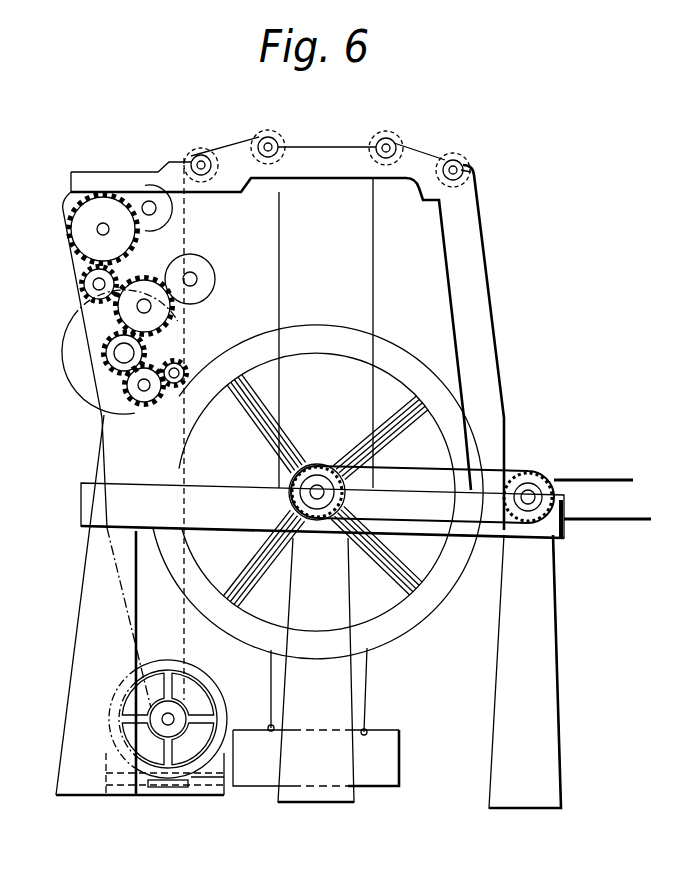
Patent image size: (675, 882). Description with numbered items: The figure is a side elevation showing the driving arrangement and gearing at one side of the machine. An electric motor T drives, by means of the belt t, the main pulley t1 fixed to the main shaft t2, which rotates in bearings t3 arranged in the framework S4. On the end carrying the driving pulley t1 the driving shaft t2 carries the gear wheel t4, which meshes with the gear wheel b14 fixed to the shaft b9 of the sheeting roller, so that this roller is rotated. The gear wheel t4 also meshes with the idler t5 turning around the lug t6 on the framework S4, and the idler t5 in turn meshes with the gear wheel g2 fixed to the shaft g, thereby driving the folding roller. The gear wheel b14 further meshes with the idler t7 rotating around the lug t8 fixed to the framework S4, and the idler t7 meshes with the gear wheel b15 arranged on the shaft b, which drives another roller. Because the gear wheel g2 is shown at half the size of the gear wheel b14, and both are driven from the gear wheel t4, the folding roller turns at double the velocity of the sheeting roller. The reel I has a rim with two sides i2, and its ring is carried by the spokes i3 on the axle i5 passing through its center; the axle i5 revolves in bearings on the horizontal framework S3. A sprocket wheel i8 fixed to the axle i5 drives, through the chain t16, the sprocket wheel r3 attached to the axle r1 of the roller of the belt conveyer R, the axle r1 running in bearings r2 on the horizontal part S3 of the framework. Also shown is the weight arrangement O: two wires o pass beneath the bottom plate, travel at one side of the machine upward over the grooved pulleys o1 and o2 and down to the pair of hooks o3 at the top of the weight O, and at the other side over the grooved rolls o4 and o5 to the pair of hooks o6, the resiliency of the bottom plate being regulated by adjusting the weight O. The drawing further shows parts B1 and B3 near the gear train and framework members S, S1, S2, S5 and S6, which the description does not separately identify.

The shaft b is at (102, 229).
The gear wheel b15 is at (66, 222).
The bearing B1 is at (165, 208).
The bearing B3 is at (206, 279).
The gear wheel b14 is at (130, 278).
The shaft b9 is at (150, 306).
The idler t7 is at (83, 285).
The lug t8 is at (85, 279).
The main pulley t1 is at (66, 334).
The main shaft t2 is at (103, 352).
The bearings t3 is at (104, 359).
The gear wheel t4 is at (103, 344).
The idler t5 is at (128, 378).
The lug t6 is at (137, 383).
The belt t is at (80, 428).
The chain t16 is at (415, 468).
The shaft g is at (182, 358).
The gear wheel g2 is at (178, 369).
The wires o is at (185, 229).
The grooved pulley o1 is at (388, 139).
The grooved pulley o2 is at (461, 160).
The pair of hooks o3 is at (366, 730).
The grooved roll o4 is at (271, 136).
The grooved roll o5 is at (199, 152).
The pair of hooks o6 is at (268, 726).
The weight O is at (316, 758).
The stand leg S is at (548, 668).
The stand leg S1 is at (90, 682).
The central support S2 is at (317, 797).
The horizontal framework S3 is at (562, 540).
The framework S4 is at (98, 455).
The side frame S5 is at (475, 242).
The top frame S6 is at (331, 150).
The reel I is at (315, 328).
The sides of the rim i2 is at (396, 344).
The spokes i3 is at (393, 403).
The axle i5 is at (312, 488).
The sprocket wheel i8 is at (308, 470).
The axle r1 is at (537, 492).
The bearings r2 is at (537, 507).
The sprocket wheel r3 is at (528, 481).
The belt conveyer R is at (593, 477).
The electric motor T is at (165, 664).